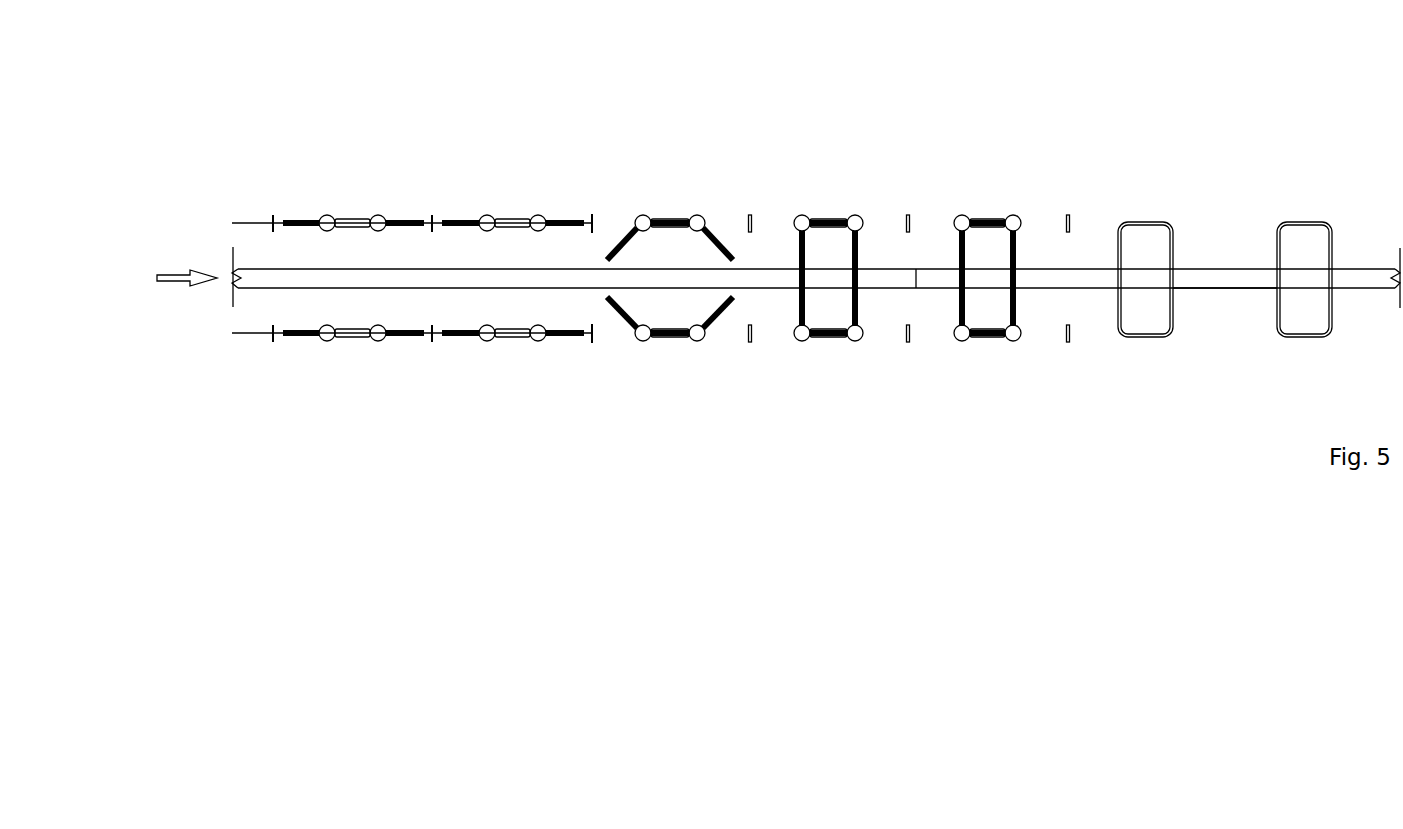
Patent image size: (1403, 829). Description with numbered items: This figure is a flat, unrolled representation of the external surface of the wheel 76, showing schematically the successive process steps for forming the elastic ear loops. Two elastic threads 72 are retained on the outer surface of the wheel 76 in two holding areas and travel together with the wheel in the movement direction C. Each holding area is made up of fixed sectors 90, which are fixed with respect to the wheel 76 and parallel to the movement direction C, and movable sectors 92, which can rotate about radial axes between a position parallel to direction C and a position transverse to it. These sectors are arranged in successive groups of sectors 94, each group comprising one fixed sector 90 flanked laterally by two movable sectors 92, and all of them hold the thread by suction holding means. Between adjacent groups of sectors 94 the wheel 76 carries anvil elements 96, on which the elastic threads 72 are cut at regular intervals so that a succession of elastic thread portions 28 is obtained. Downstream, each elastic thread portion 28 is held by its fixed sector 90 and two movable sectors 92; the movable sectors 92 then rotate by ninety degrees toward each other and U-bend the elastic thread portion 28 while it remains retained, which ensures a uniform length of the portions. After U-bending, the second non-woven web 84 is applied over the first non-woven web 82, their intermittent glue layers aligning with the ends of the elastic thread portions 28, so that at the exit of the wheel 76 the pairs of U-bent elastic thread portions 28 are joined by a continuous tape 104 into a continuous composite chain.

The wheel 76 is at (726, 86).
The elastic thread 72 is at (236, 221).
The first non-woven web 82 is at (260, 280).
The second non-woven web 84 is at (1038, 285).
The fixed sector 90 is at (350, 218).
The movable sector 92 is at (321, 217).
The group of sectors 94 is at (352, 176).
The anvil element 96 is at (272, 217).
The elastic thread portion 28 is at (734, 257).
The continuous tape 104 is at (1206, 298).
The movement direction C is at (180, 283).